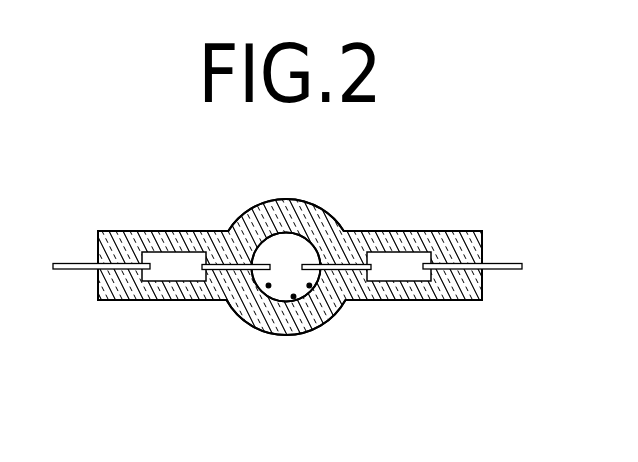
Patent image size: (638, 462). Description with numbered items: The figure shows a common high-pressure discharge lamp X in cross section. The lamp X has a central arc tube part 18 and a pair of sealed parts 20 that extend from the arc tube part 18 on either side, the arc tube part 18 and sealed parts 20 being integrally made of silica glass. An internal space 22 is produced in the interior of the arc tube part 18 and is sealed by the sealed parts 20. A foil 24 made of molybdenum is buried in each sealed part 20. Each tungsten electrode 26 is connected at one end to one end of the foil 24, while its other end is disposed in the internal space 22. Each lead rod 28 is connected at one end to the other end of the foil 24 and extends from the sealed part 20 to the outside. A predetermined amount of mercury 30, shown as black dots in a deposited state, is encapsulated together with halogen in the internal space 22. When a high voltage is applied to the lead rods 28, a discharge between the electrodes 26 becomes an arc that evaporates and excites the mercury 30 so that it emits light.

The high-pressure discharge lamp X is at (286, 246).
The arc tube part 18 is at (293, 205).
The sealed part 20 is at (163, 237).
The internal space 22 is at (285, 257).
The foil 24 is at (185, 275).
The electrode 26 is at (240, 270).
The lead rod 28 is at (77, 272).
The mercury 30 is at (294, 299).